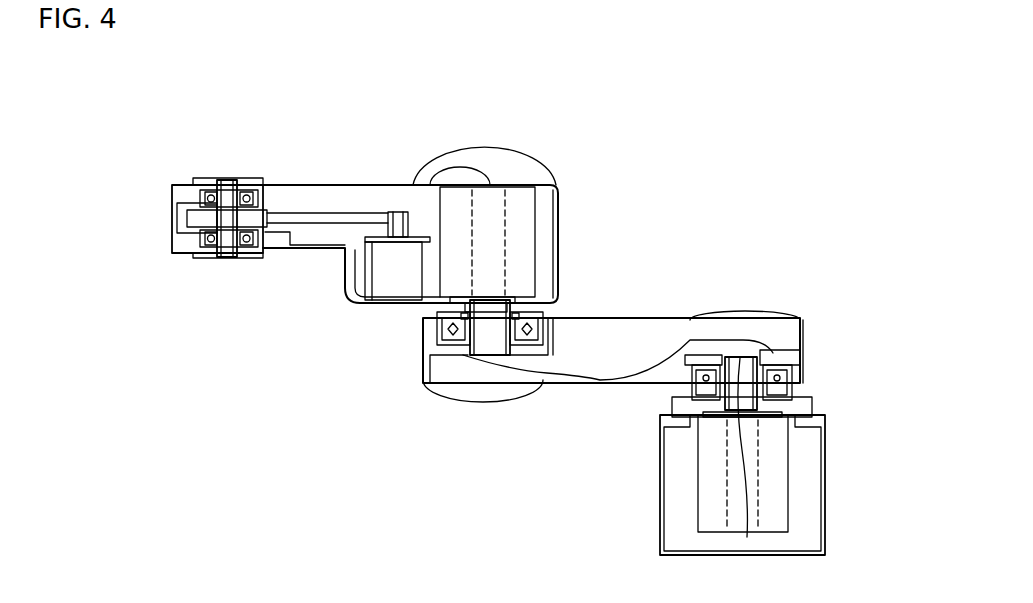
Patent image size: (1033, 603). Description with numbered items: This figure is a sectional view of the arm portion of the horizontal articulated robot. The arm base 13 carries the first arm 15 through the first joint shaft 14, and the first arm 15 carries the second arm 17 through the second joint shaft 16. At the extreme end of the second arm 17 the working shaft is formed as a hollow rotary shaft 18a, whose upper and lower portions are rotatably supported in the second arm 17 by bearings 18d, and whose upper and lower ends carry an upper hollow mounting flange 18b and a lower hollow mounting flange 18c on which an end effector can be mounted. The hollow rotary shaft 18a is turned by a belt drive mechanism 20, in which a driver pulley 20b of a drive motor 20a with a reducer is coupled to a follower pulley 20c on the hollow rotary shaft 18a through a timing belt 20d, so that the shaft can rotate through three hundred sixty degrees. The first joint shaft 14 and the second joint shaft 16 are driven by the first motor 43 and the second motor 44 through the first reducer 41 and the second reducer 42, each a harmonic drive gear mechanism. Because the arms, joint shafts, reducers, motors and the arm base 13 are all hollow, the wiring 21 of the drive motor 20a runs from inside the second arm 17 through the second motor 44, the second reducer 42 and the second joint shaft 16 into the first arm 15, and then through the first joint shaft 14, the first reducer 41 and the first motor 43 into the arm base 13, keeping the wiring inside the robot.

The arm base 13 is at (661, 522).
The first joint shaft 14 is at (765, 352).
The first arm 15 is at (623, 318).
The second joint shaft 16 is at (463, 355).
The second arm 17 is at (318, 183).
The hollow rotary shaft 18a is at (210, 180).
The upper hollow mounting flange 18b is at (255, 178).
The lower hollow mounting flange 18c is at (200, 257).
The bearings 18d is at (205, 240).
The belt drive mechanism 20 is at (352, 207).
The drive motor with reducer 20a is at (388, 283).
The driver pulley 20b is at (383, 240).
The follower pulley 20c is at (192, 218).
The timing belt 20d is at (307, 222).
The wiring 21 is at (490, 357).
The first reducer 41 is at (795, 377).
The second reducer 42 is at (527, 337).
The first motor 43 is at (788, 465).
The second motor 44 is at (532, 212).